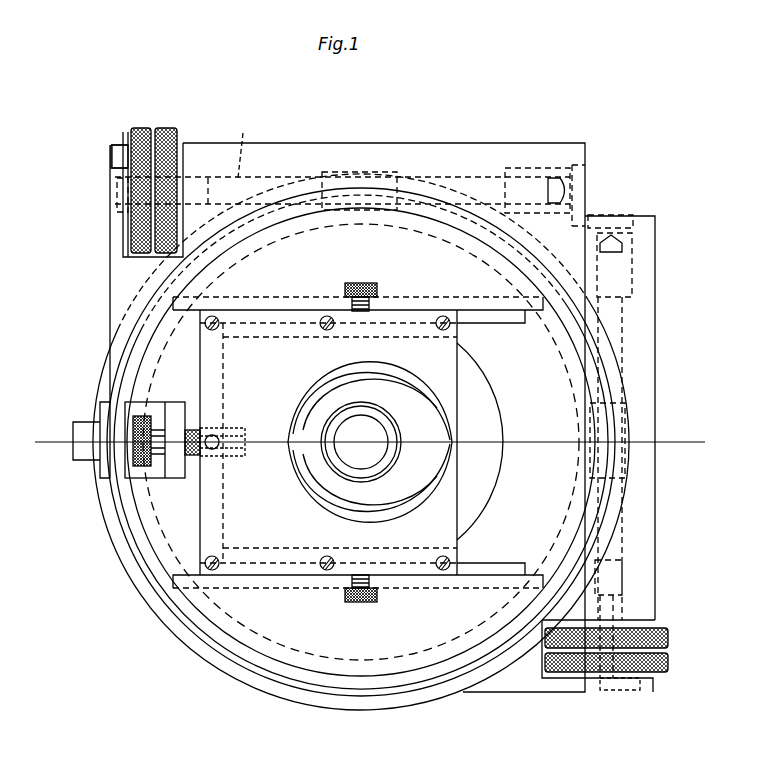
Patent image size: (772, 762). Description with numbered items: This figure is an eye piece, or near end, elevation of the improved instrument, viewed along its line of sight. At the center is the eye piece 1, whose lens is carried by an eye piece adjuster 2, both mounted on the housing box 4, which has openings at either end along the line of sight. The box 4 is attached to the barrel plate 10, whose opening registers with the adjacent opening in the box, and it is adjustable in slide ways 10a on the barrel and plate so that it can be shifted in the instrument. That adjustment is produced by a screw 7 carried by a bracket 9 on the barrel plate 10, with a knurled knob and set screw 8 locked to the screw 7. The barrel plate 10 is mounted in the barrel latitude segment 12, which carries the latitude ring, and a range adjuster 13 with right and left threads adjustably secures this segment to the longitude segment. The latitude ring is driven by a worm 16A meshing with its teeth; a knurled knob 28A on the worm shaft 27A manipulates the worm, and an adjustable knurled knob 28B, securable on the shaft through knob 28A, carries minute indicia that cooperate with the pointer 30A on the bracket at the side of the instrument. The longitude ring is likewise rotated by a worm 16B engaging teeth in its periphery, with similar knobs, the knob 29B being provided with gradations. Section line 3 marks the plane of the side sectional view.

The eye piece 1 is at (323, 492).
The eye piece adjuster 2 is at (735, 318).
The section line 3 is at (38, 442).
The box 4 is at (306, 567).
The screw 7 is at (191, 458).
The knurled knob and set screw 8 is at (144, 468).
The bracket 9 is at (177, 402).
The barrel plate 10 is at (560, 511).
The slide ways 10a is at (503, 317).
The barrel latitude segment 12 is at (283, 672).
The range adjuster 13 is at (340, 702).
The worm 16A is at (590, 466).
The worm 16B is at (368, 170).
The worm shaft 27A is at (673, 568).
The knurled knob 28A is at (163, 127).
The adjustable knurled knob 28B is at (668, 661).
The knob 29B is at (133, 130).
The pointer 30A is at (127, 140).